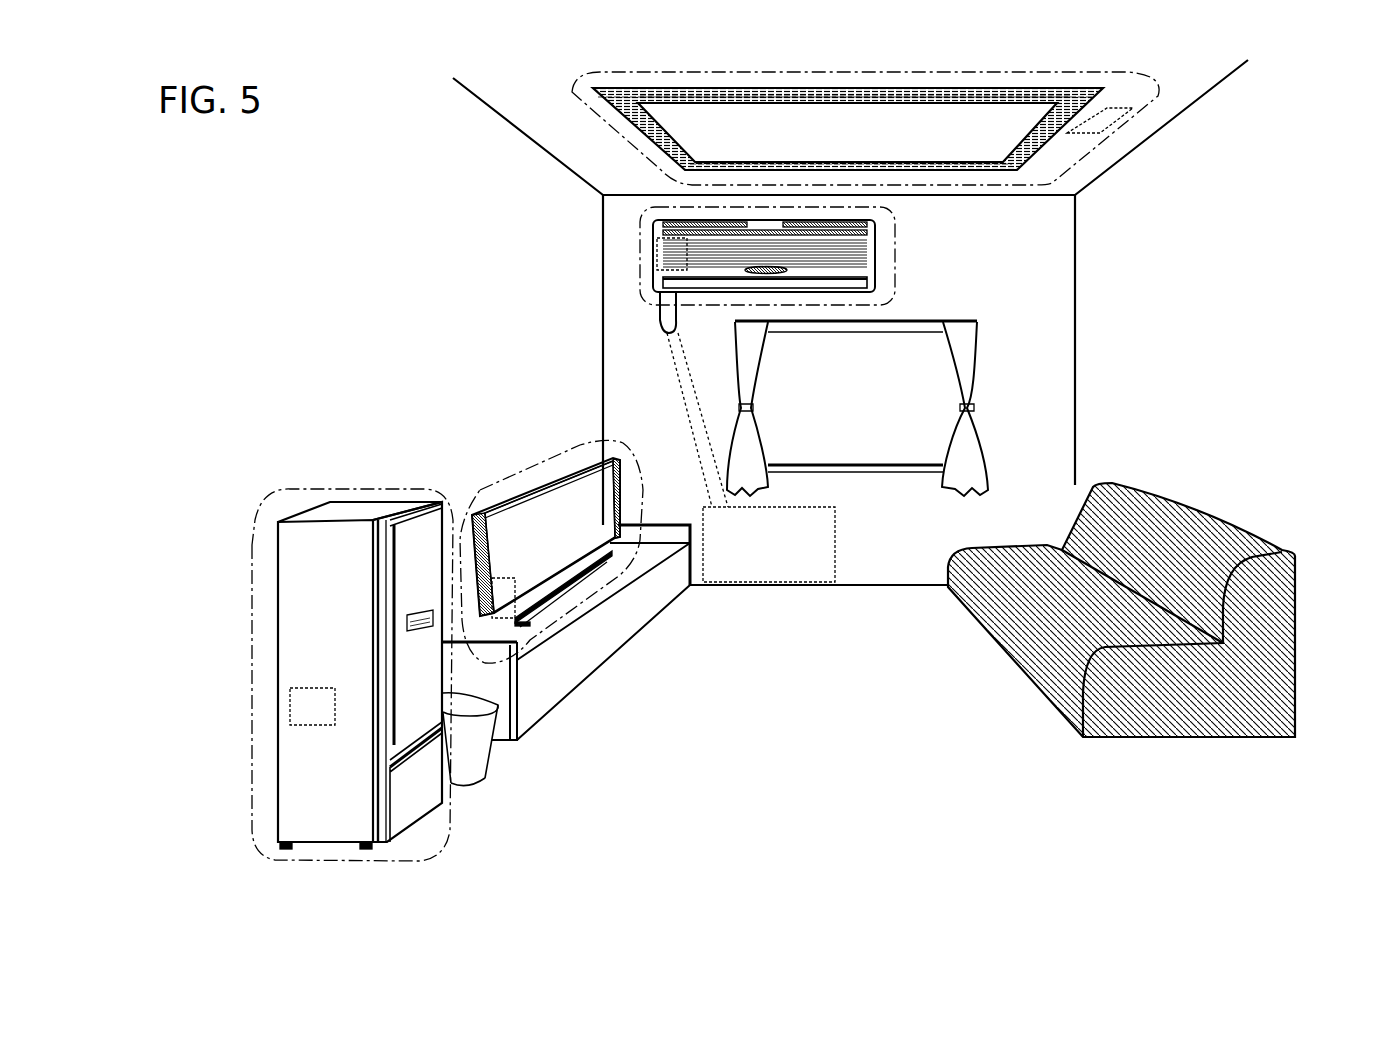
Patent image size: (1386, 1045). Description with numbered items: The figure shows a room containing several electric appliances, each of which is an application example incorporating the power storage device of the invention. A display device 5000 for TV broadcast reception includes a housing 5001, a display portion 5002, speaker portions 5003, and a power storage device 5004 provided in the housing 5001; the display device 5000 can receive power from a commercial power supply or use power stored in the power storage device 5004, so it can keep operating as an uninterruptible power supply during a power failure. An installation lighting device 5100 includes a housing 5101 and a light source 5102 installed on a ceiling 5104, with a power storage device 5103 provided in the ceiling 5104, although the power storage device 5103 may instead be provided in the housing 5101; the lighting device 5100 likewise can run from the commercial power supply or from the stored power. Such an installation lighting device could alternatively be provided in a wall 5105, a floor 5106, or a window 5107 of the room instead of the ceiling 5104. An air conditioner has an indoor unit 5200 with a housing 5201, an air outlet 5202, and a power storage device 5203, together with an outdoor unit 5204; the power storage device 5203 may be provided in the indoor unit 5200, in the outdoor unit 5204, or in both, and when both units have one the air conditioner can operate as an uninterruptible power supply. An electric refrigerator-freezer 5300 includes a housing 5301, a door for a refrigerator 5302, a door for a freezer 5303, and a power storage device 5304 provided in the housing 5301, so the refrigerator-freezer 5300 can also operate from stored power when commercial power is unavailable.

The display device 5000 is at (502, 467).
The housing 5001 is at (552, 480).
The display portion 5002 is at (567, 462).
The speaker portions 5003 is at (597, 470).
The power storage device 5004 is at (480, 514).
The installation lighting device 5100 is at (593, 112).
The housing 5101 is at (717, 150).
The light source 5102 is at (648, 137).
The power storage device 5103 is at (1117, 122).
The ceiling 5104 is at (554, 104).
The wall 5105 is at (1154, 225).
The floor 5106 is at (907, 640).
The window 5107 is at (932, 450).
The indoor unit 5200 is at (638, 228).
The housing 5201 is at (655, 250).
The air outlet 5202 is at (673, 285).
The power storage device 5203 is at (655, 272).
The outdoor unit 5204 is at (762, 540).
The electric refrigerator-freezer 5300 is at (253, 547).
The housing 5301 is at (288, 600).
The door for a refrigerator 5302 is at (417, 675).
The door for a freezer 5303 is at (417, 795).
The power storage device 5304 is at (290, 705).